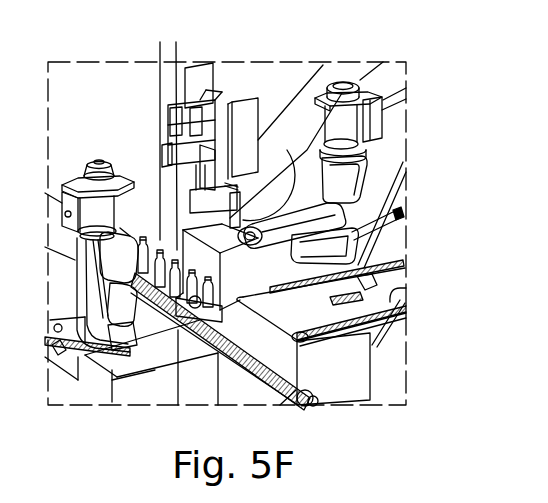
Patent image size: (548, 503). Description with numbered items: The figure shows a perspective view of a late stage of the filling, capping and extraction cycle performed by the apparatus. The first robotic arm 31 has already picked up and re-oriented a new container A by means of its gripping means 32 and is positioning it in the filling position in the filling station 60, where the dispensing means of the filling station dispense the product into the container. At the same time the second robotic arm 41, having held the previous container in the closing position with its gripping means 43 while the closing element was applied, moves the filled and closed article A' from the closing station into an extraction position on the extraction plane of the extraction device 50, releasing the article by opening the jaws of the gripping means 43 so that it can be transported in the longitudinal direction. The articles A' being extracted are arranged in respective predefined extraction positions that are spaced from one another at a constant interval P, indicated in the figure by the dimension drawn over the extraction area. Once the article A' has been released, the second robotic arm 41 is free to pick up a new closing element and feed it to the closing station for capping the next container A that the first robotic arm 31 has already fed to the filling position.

The constant interval P is at (215, 47).
The filling station 60 is at (287, 150).
The gripping means 32 is at (337, 80).
The first robotic arm 31 is at (403, 216).
The filled and closed article A' is at (91, 224).
The gripping means 43 is at (186, 340).
The second robotic arm 41 is at (135, 367).
The extraction plane 50 is at (313, 372).
The container A is at (339, 332).